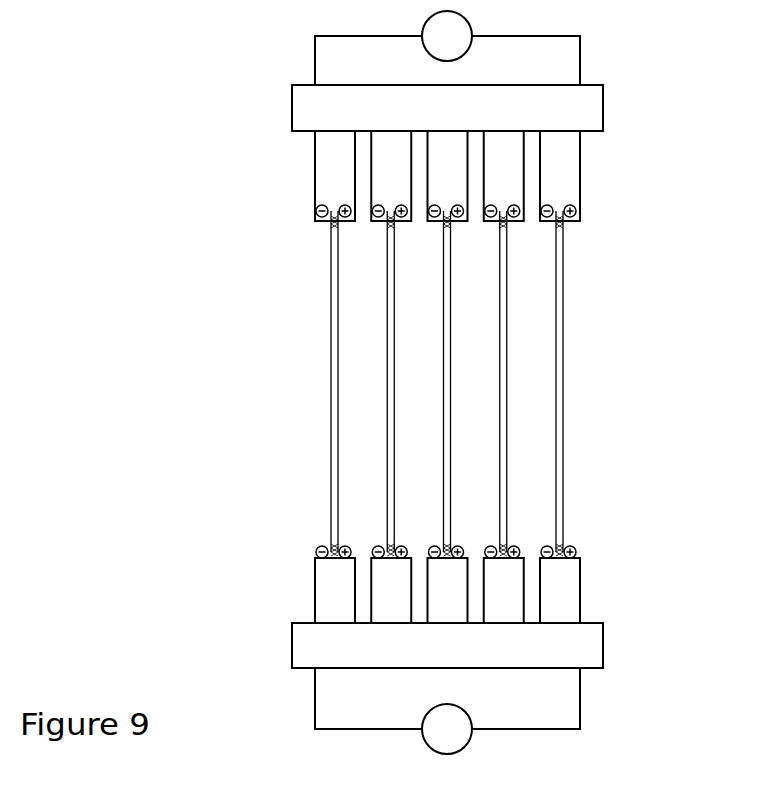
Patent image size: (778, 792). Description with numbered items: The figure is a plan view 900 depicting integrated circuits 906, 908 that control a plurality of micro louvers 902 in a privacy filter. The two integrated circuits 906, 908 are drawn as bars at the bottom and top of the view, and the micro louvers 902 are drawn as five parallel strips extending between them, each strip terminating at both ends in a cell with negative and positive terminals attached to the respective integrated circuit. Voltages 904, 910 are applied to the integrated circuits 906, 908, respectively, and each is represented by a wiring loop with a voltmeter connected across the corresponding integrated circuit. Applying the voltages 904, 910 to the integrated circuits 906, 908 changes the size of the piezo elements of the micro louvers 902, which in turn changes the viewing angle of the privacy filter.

The plan view 900 is at (258, 340).
The micro louvers 902 is at (332, 378).
The voltage 904 is at (315, 697).
The integrated circuit 906 is at (603, 645).
The integrated circuit 908 is at (292, 107).
The voltage 910 is at (581, 54).